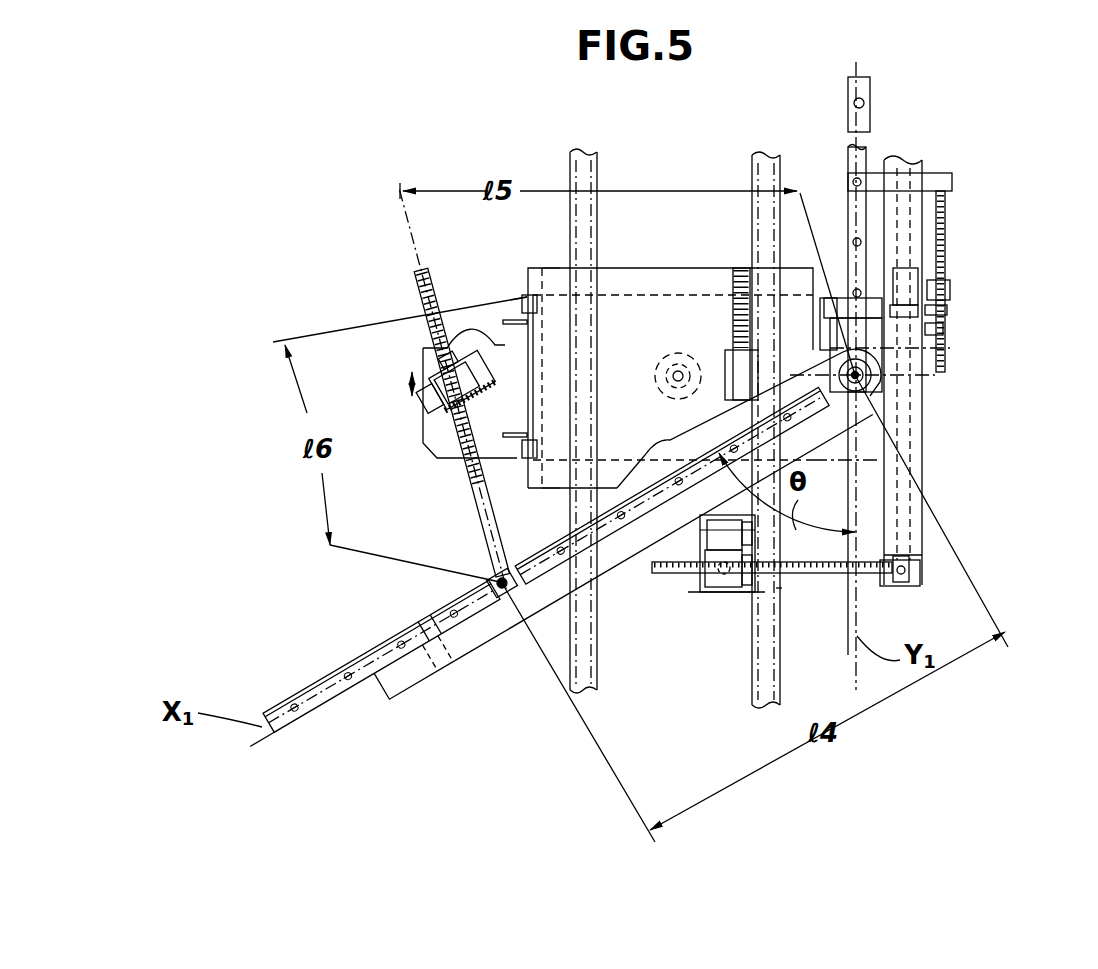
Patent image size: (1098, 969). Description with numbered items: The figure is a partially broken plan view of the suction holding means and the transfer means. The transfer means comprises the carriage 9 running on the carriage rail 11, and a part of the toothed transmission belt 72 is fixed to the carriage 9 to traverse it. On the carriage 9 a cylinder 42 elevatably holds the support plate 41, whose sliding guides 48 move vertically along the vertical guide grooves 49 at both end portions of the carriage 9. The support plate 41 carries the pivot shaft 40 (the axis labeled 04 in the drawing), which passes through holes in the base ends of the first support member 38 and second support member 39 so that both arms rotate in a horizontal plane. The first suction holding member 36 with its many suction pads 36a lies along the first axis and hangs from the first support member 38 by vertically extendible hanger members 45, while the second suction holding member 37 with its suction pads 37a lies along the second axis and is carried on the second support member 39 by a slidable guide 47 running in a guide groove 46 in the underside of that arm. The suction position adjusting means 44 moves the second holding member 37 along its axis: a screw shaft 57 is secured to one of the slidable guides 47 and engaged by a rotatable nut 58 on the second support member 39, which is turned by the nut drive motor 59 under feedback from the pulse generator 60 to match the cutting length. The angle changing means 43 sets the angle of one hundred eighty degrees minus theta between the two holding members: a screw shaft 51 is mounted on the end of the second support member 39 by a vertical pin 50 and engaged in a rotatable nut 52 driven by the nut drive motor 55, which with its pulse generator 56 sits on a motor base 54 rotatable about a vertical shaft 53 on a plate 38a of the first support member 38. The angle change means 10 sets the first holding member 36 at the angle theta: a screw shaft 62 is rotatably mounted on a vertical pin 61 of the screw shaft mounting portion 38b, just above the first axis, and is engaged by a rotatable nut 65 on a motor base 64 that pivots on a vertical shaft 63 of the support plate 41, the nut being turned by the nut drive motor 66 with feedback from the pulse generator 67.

The carriage 9 is at (658, 294).
The angle change means 10 is at (465, 490).
The carriage rail 11 is at (578, 182).
The first suction holding member 36 is at (445, 657).
The suction pads 36a is at (340, 670).
The second suction holding member 37 is at (868, 152).
The suction pads 37a is at (870, 104).
The first support member 38 is at (400, 697).
The plate 38a is at (705, 596).
The screw shaft mounting portion 38b is at (506, 573).
The second support member 39 is at (905, 160).
The pivot shaft 40 is at (866, 400).
The support plate 41 is at (508, 300).
The cylinder 42 is at (655, 366).
The angle changing means 43 is at (826, 590).
The suction position adjusting means 44 is at (952, 218).
The hanger members 45 is at (634, 520).
The guide groove 46 is at (924, 560).
The slidable guide 47 is at (953, 182).
The sliding guides 48 is at (522, 297).
The vertical guide grooves 49 is at (540, 297).
The vertical pin 50 is at (915, 588).
The screw shaft 51 is at (779, 592).
The rotatable nut 52 is at (728, 589).
The vertical shaft 53 is at (718, 592).
The motor base 54 is at (735, 595).
The nut drive motor 55 is at (755, 548).
The pulse generator 56 is at (703, 575).
The screw shaft 57 is at (947, 329).
The rotatable nut 58 is at (951, 291).
The nut drive motor 59 is at (920, 306).
The pulse generator 60 is at (918, 276).
The vertical pin 61 is at (506, 596).
The screw shaft 62 is at (468, 458).
The vertical shaft 63 is at (432, 392).
The motor base 64 is at (478, 322).
The rotatable nut 65 is at (422, 366).
The nut drive motor 66 is at (462, 345).
The pulse generator 67 is at (455, 318).
The toothed transmission belt 72 is at (733, 290).
The pivot axis 04 is at (871, 388).